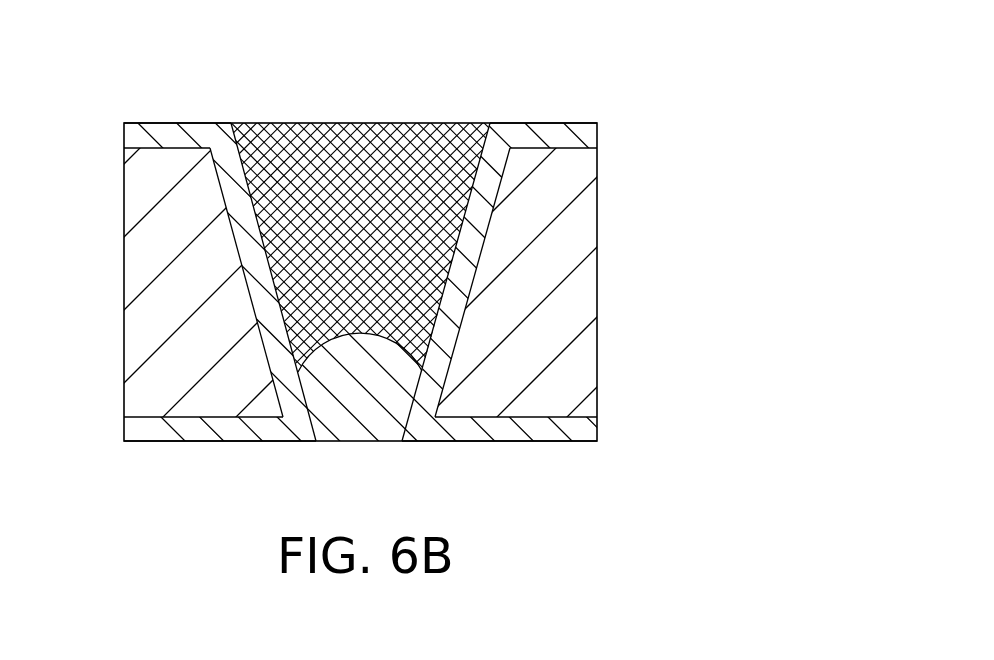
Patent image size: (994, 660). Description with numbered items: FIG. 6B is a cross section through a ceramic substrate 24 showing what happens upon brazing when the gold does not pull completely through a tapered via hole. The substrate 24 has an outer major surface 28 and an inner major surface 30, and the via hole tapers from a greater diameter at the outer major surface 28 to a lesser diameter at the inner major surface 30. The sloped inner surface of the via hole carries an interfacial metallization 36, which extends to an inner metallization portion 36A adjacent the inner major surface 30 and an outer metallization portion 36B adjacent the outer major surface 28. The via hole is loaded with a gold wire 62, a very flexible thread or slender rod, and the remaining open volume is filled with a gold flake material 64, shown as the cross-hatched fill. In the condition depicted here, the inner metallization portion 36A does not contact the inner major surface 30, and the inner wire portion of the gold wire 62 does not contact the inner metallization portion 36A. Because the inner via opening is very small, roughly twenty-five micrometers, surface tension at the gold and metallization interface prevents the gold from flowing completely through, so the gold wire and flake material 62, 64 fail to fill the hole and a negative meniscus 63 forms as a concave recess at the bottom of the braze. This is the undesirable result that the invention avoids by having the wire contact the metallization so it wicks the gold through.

The ceramic substrate 24 is at (580, 290).
The outer major surface 28 is at (552, 146).
The inner major surface 30 is at (514, 418).
The interfacial metallization 36 is at (464, 281).
The inner metallization portion 36A is at (198, 430).
The outer metallization portion 36B is at (170, 137).
The gold wire 62 is at (410, 251).
The gold flake material 64 is at (369, 138).
The negative meniscus 63 is at (352, 337).